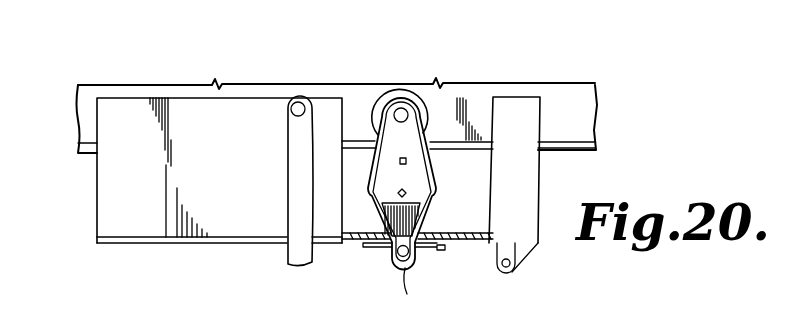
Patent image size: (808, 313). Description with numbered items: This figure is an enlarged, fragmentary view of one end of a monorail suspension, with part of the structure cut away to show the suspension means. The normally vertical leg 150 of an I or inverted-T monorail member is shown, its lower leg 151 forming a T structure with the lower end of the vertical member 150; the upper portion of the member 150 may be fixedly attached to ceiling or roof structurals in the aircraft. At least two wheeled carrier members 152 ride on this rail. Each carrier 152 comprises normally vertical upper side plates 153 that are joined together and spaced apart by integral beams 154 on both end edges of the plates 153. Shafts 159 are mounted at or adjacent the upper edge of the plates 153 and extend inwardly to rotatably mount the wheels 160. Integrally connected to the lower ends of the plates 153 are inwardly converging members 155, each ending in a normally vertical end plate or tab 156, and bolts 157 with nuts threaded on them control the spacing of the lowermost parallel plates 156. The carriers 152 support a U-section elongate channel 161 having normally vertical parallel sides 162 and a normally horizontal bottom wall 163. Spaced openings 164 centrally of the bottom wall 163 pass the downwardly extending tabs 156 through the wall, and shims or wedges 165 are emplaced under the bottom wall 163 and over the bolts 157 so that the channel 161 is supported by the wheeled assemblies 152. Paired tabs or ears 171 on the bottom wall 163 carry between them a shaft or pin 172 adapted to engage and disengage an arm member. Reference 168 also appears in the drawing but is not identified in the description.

The normally vertical leg of monorail member 150 is at (568, 93).
The lower leg of monorail member 151 is at (579, 149).
The wheeled carrier member 152 is at (440, 170).
The upper side plate 153 is at (405, 138).
The integral beam 154 is at (368, 183).
The inwardly converging member 155 is at (394, 225).
The normally vertical end plate 156 is at (407, 271).
The bolt 157 is at (400, 268).
The shaft 159 is at (402, 110).
The wheel 160 is at (376, 102).
The U-section elongate channel 161 is at (130, 254).
The normally vertical parallel side 162 is at (92, 189).
The bottom wall 163 is at (211, 247).
The spaced opening 164 is at (398, 262).
The shim or wedge 165 is at (363, 249).
The lever pivot 168 is at (290, 112).
The paired tabs or ears 171 is at (527, 254).
The shaft or pin 172 is at (513, 271).